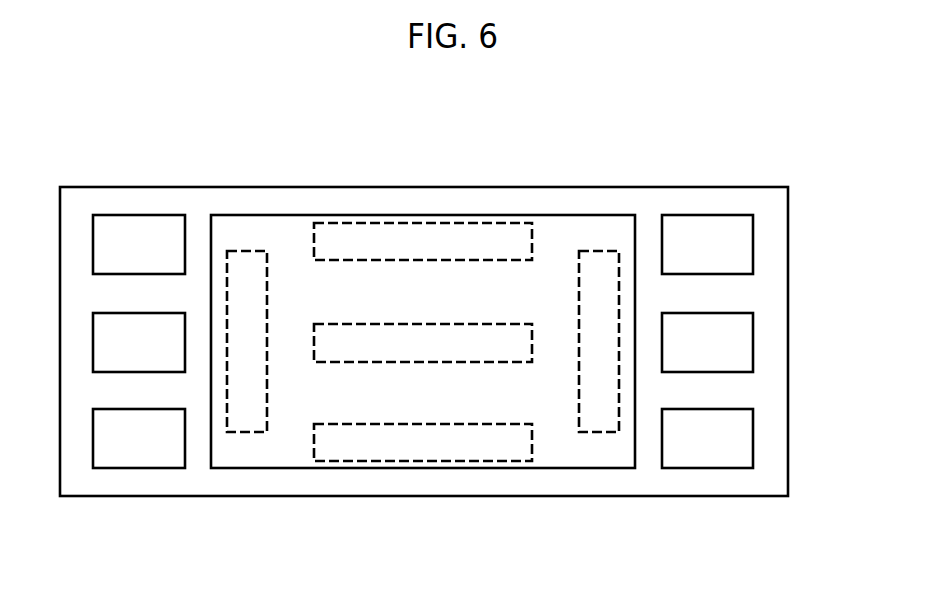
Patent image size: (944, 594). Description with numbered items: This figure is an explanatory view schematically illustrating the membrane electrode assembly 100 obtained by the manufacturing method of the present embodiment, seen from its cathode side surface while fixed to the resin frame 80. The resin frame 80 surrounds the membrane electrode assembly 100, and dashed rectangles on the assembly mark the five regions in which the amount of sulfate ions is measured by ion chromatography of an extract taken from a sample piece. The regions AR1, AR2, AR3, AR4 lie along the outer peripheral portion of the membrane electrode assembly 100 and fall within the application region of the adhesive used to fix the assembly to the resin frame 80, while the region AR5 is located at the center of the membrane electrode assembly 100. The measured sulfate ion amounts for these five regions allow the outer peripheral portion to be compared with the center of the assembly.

The resin frame 80 is at (788, 341).
The membrane electrode assembly 100 is at (515, 215).
The region AR1 is at (247, 251).
The region AR2 is at (408, 223).
The region AR3 is at (357, 363).
The region AR4 is at (468, 462).
The region AR5 is at (598, 251).